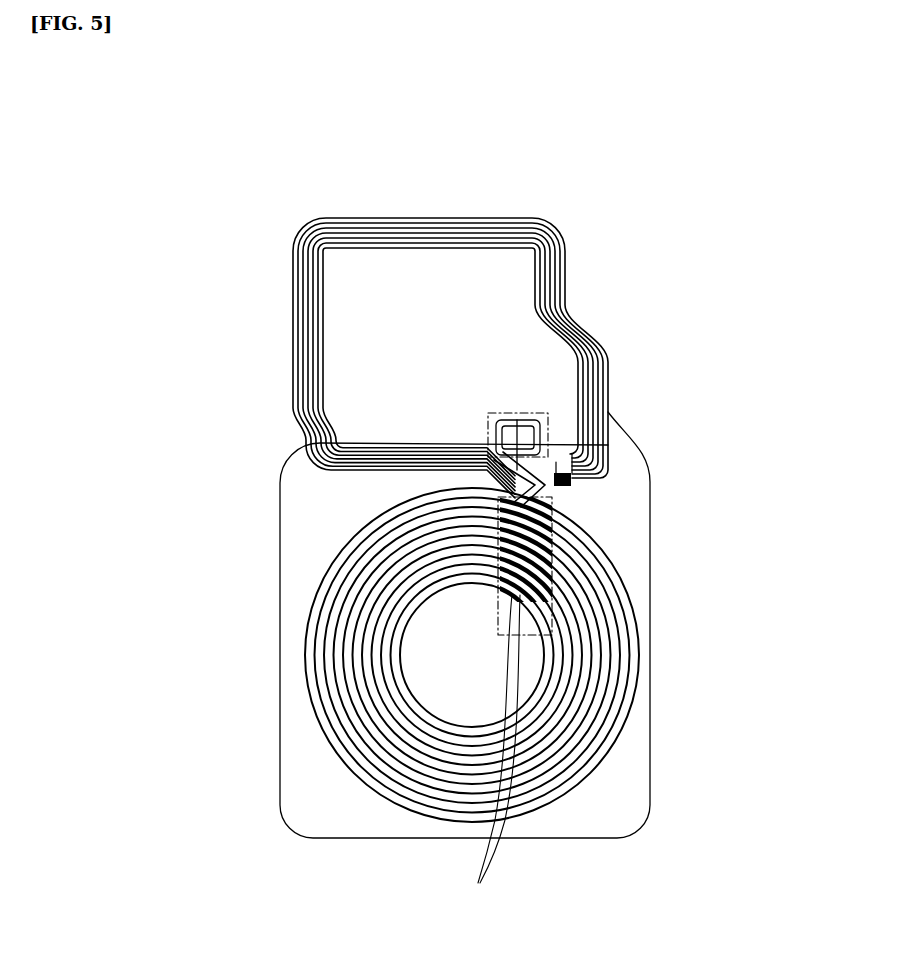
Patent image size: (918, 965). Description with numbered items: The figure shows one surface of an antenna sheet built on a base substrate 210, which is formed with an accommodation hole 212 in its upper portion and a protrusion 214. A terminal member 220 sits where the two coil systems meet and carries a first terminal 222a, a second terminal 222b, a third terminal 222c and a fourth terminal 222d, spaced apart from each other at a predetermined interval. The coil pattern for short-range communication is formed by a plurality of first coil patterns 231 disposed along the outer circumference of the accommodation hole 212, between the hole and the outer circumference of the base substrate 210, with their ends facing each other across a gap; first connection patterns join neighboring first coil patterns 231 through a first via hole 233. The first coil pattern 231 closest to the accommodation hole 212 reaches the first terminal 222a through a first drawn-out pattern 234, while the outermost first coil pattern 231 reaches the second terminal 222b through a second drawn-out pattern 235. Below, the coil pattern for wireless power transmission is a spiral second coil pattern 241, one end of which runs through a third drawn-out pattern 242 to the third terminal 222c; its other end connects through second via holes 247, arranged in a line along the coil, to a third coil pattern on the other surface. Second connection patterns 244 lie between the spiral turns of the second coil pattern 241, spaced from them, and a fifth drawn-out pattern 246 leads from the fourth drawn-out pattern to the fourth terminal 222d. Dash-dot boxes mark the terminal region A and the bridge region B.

The base substrate 210 is at (652, 730).
The accommodation hole 212 is at (430, 289).
The protrusion 214 is at (507, 442).
The terminal member 220 is at (535, 416).
The first terminal 222a is at (517, 437).
The second terminal 222b is at (538, 424).
The third terminal 222c is at (500, 432).
The fourth terminal 222d is at (542, 440).
The first coil pattern 231 is at (566, 270).
The first via hole 233 is at (507, 500).
The first drawn-out pattern 234 is at (490, 462).
The second drawn-out pattern 235 is at (607, 445).
The second coil pattern 241 is at (624, 666).
The third drawn-out pattern 242 is at (352, 530).
The second connection pattern 244 is at (497, 588).
The fifth drawn-out pattern 246 is at (552, 522).
The second via hole 247 is at (487, 752).
The region A (terminal area) A is at (560, 470).
The region B (bridge area) B is at (552, 568).